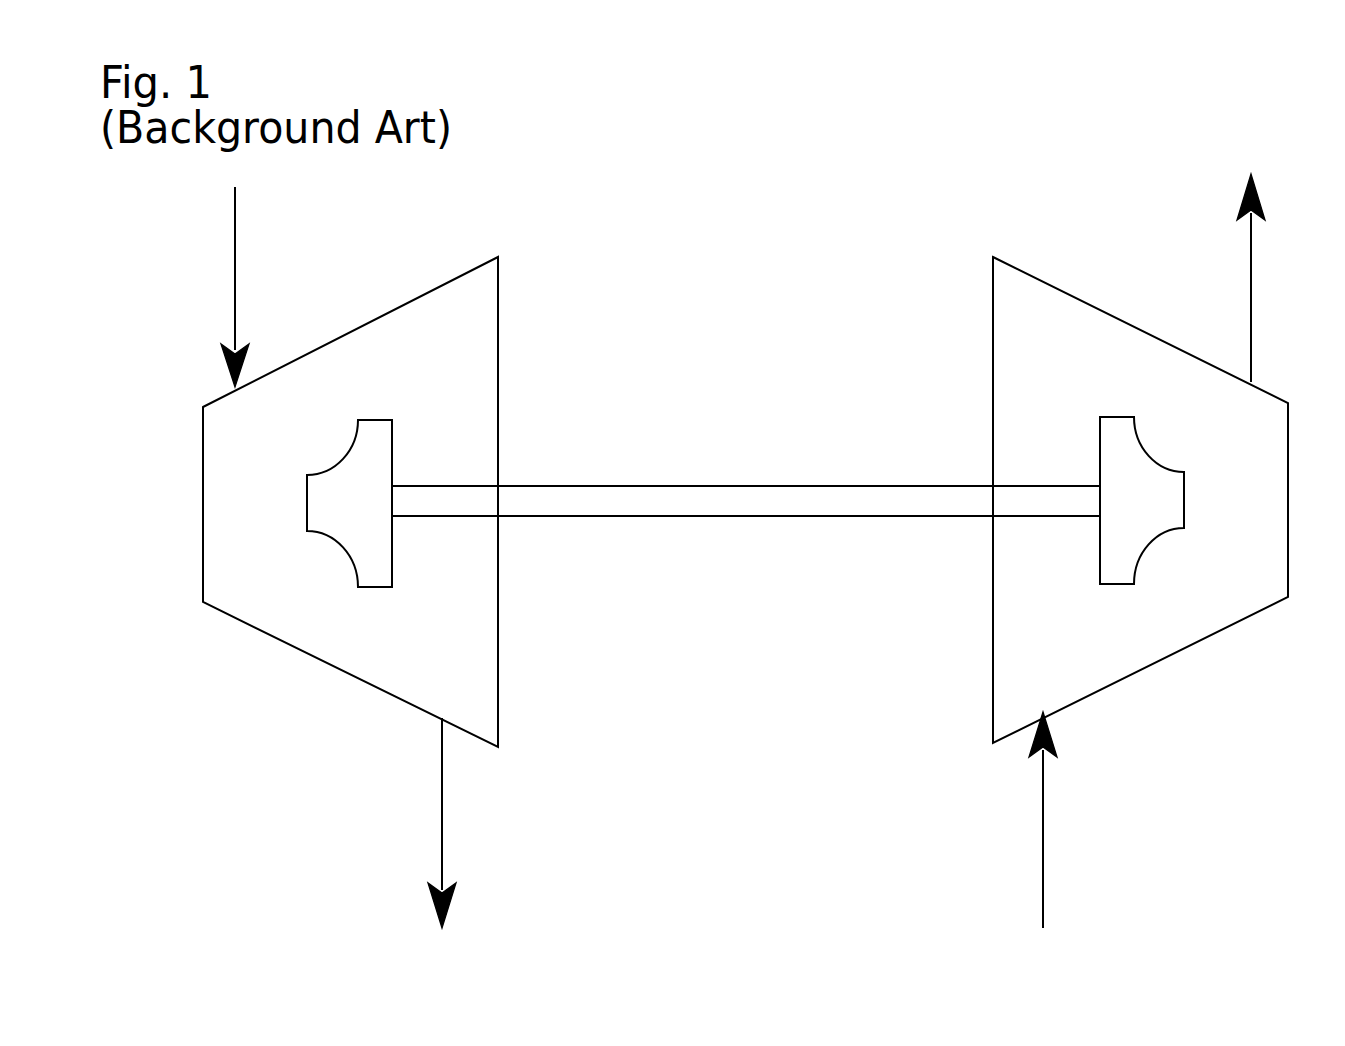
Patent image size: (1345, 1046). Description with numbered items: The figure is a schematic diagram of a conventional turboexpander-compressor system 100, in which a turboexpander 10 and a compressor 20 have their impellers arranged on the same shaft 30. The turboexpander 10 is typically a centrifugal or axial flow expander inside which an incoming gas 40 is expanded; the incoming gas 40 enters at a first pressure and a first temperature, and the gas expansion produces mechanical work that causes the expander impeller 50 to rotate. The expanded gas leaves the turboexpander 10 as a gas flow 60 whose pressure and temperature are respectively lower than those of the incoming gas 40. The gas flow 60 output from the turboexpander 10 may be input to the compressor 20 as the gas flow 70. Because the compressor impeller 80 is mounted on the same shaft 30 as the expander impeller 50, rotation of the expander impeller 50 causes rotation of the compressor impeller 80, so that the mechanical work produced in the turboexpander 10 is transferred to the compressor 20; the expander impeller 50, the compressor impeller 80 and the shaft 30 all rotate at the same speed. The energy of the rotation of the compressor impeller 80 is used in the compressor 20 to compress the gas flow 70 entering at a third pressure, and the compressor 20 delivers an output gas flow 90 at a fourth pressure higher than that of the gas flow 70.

The turboexpander-compressor system 100 is at (753, 171).
The turboexpander 10 is at (498, 293).
The compressor 20 is at (993, 292).
The shaft 30 is at (795, 485).
The incoming gas 40 is at (235, 205).
The expander impeller 50 is at (330, 542).
The gas flow 60 is at (442, 825).
The gas flow 70 is at (1043, 863).
The compressor impeller 80 is at (1152, 545).
The output gas flow 90 is at (1252, 282).